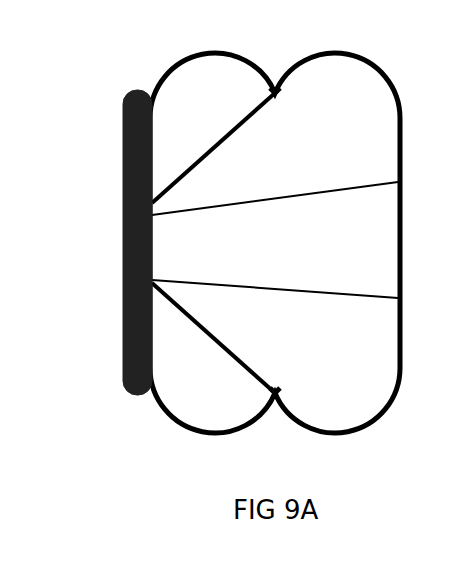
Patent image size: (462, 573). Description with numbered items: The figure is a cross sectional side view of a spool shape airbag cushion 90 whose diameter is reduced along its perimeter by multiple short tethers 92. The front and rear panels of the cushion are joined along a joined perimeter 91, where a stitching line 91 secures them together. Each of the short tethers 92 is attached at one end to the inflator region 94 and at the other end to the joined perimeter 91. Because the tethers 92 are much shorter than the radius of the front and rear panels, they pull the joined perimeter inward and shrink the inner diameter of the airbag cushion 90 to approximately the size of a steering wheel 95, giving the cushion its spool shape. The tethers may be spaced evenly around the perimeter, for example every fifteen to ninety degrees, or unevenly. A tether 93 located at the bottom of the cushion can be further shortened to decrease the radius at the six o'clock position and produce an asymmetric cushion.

The spool shape airbag cushion 90 is at (372, 63).
The joined perimeter with stitching line 91 is at (278, 97).
The short tethers 92 is at (238, 130).
The bottom tether 93 is at (233, 352).
The inflator region 94 is at (274, 419).
The steering wheel 95 is at (152, 356).